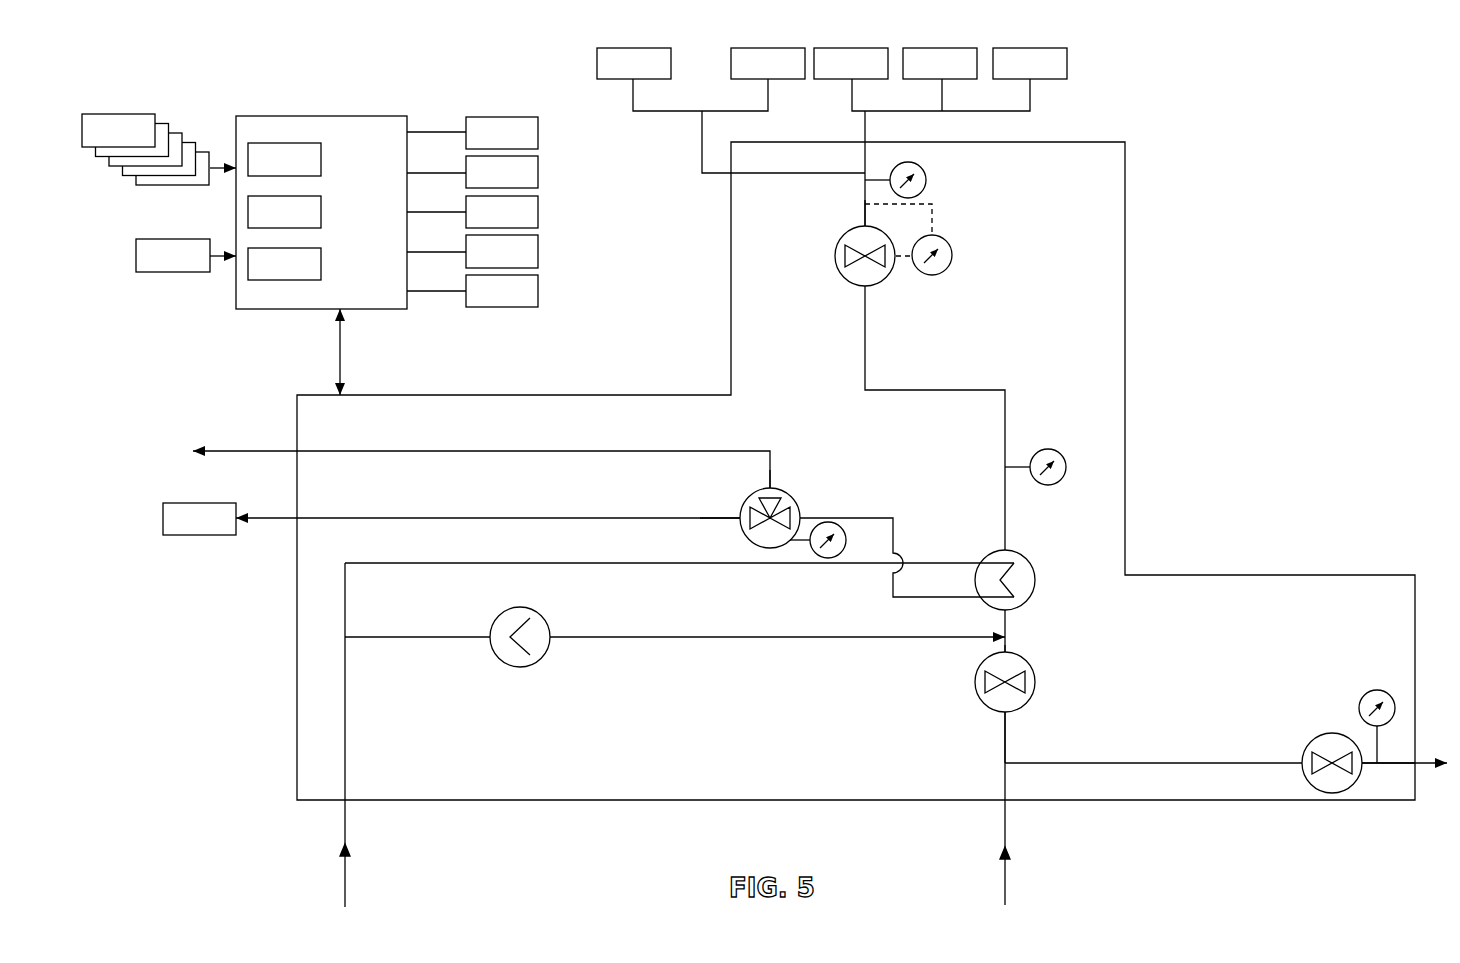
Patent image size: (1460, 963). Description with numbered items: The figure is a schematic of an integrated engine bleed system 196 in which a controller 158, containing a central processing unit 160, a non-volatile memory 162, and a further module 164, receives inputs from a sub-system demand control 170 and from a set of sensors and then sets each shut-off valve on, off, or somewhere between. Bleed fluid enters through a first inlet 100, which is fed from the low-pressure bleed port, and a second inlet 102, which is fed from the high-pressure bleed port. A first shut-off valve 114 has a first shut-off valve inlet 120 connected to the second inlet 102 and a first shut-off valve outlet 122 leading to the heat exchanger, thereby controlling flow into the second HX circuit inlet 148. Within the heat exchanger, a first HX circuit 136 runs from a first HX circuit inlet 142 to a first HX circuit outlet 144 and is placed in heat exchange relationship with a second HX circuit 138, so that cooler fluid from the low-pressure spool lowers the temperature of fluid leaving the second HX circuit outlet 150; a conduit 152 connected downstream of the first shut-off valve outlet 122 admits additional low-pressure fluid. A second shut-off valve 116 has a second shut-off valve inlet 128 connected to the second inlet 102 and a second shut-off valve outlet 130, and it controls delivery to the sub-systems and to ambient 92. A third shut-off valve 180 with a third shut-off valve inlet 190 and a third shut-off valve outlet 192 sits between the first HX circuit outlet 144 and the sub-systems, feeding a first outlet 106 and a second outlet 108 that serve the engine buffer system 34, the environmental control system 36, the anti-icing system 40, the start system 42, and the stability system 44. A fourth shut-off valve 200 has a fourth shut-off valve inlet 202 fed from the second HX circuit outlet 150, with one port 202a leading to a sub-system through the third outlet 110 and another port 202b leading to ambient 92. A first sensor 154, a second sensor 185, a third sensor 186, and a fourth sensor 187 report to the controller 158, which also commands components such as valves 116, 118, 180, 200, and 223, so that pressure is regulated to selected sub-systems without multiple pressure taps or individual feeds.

The controller 158 is at (246, 75).
The central processing unit 160 is at (321, 160).
The non-volatile memory 162 is at (321, 212).
The input/output module 164 is at (321, 264).
The sub-system demand control 170 is at (195, 272).
The integrated engine bleed system 196 is at (178, 366).
The second shut-off valve 116 is at (538, 132).
The valve 118 is at (538, 172).
The third shut-off valve 180 is at (538, 212).
The fourth shut-off valve 200 is at (538, 252).
The controlled component 223 is at (500, 307).
The engine buffer system 34 is at (633, 48).
The environmental control system 36 is at (769, 48).
The anti-icing system 40 is at (852, 48).
The start system 42 is at (942, 48).
The stability system 44 is at (1032, 48).
The first outlet 106 is at (702, 143).
The second outlet 108 is at (866, 125).
The third shut-off valve outlet 192 is at (865, 224).
The third shut-off valve inlet 190 is at (865, 290).
The second sensor 185 is at (927, 182).
The third sensor 186 is at (952, 258).
The ambient 92 is at (218, 451).
The valve outlet port 202b is at (770, 468).
The third outlet 110 is at (270, 518).
The valve port 202a is at (726, 518).
The fourth shut-off valve inlet 202 is at (812, 520).
The second HX circuit inlet 148 is at (968, 563).
The second HX circuit outlet 150 is at (965, 597).
The first HX circuit outlet 144 is at (1008, 548).
The second HX circuit 138 is at (1023, 580).
The first HX circuit 136 is at (1018, 618).
The first shut-off valve 114 is at (1036, 690).
The first shut-off valve outlet 122 is at (1010, 652).
The first HX circuit inlet 142 is at (1000, 628).
The conduit 152 is at (617, 640).
The first sensor 154 is at (520, 667).
The first inlet 100 is at (345, 877).
The second inlet 102 is at (1005, 882).
The first shut-off valve inlet 120 is at (1003, 733).
The second shut-off valve inlet 128 is at (1290, 763).
The second shut-off valve outlet 130 is at (1368, 768).
The fourth sensor 187 is at (1373, 688).